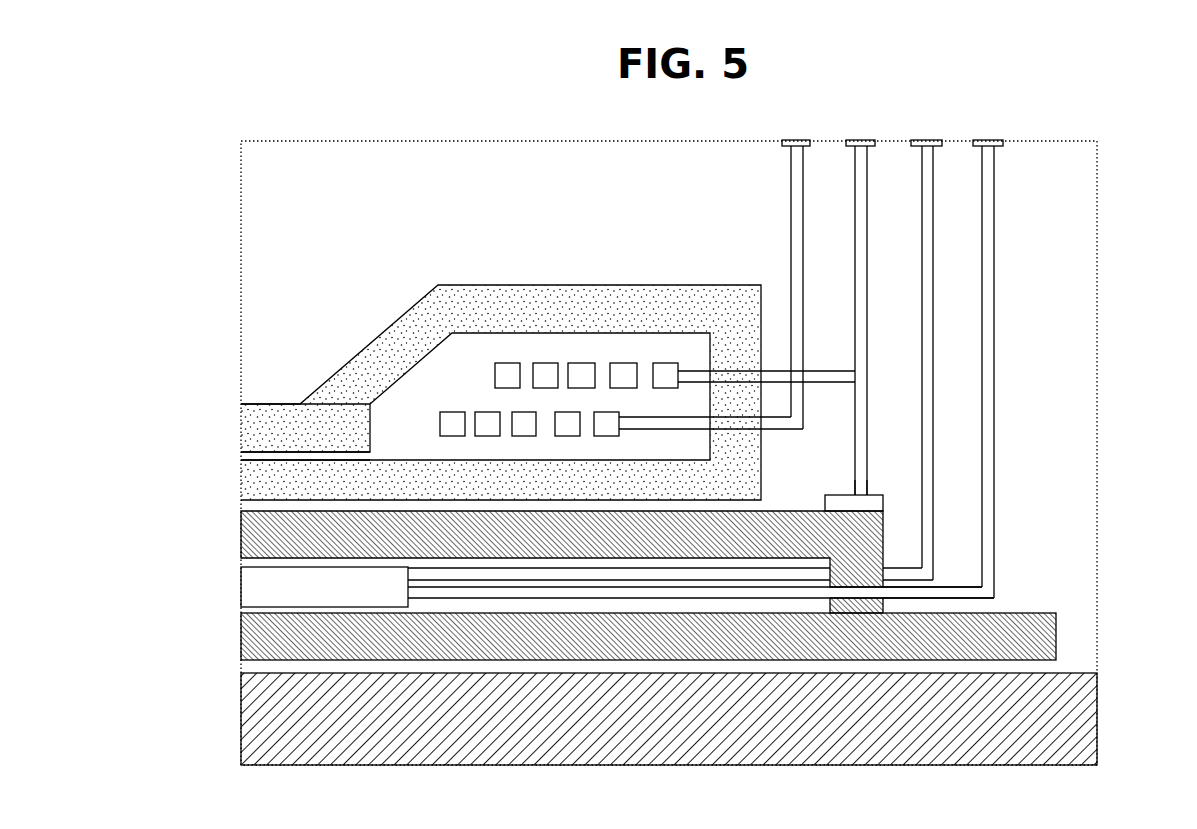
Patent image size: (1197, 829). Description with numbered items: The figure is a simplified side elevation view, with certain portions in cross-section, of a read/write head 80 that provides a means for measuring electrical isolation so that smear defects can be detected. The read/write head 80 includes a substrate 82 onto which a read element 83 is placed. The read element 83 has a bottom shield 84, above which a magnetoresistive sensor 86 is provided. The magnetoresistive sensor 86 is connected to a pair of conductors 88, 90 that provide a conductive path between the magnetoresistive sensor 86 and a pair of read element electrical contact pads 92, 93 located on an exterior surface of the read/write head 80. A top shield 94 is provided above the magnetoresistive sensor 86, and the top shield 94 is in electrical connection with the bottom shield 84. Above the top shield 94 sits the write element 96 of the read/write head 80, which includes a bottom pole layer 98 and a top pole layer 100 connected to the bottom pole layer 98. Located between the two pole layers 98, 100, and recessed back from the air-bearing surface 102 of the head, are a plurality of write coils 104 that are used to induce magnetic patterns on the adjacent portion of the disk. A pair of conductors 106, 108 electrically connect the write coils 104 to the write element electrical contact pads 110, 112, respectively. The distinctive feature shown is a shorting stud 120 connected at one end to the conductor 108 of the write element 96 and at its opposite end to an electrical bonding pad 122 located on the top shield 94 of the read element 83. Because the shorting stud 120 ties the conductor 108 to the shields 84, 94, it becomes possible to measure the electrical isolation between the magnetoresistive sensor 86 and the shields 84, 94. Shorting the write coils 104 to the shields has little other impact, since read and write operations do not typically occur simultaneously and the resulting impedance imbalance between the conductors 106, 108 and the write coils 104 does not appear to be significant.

The read/write head 80 is at (226, 127).
The substrate 82 is at (565, 728).
The read element 83 is at (214, 578).
The bottom shield 84 is at (565, 647).
The magnetoresistive sensor 86 is at (315, 598).
The conductor 88 is at (933, 212).
The conductor 90 is at (994, 258).
The read element electrical contact pad 92 is at (926, 140).
The read element electrical contact pad 93 is at (988, 140).
The top shield 94 is at (562, 548).
The write element 96 is at (212, 467).
The bottom pole layer 98 is at (497, 493).
The top pole layer 100 is at (287, 440).
The air-bearing surface 102 is at (220, 410).
The write coils 104 is at (508, 342).
The conductor 106 is at (797, 245).
The conductor 108 is at (858, 328).
The write element electrical contact pad 110 is at (796, 140).
The write element electrical contact pad 112 is at (860, 140).
The shorting stud 120 is at (862, 419).
The electrical bonding pad 122 is at (862, 505).